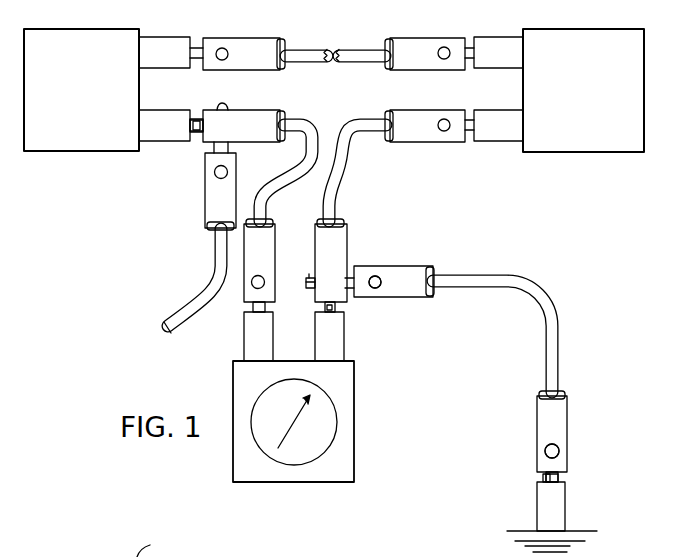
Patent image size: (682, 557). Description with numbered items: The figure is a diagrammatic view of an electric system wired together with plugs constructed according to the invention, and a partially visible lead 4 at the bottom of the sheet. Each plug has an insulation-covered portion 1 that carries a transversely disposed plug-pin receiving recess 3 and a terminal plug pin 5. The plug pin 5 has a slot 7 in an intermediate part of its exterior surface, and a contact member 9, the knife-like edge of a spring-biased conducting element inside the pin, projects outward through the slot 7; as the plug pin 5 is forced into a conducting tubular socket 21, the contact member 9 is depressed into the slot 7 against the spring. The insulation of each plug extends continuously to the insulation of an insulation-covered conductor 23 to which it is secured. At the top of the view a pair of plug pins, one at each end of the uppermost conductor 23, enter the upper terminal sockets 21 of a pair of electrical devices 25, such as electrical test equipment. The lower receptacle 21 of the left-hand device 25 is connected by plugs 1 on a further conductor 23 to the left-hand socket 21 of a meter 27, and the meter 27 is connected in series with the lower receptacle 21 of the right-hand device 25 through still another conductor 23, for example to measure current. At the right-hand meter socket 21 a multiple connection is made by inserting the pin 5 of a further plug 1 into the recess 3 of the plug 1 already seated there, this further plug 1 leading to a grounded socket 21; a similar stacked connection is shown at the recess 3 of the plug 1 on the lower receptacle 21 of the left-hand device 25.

The insulation-covered portion 1 is at (255, 36).
The plug-pin receiving recess 3 is at (220, 108).
The terminal plug pin 5 is at (198, 141).
The slot 7 is at (199, 120).
The contact member 9 is at (193, 127).
The conducting tubular socket 21 is at (163, 40).
The insulation-covered conductor 23 is at (311, 48).
The electrical device 25 is at (53, 152).
The meter 27 is at (302, 473).
The fitting 4 is at (147, 549).